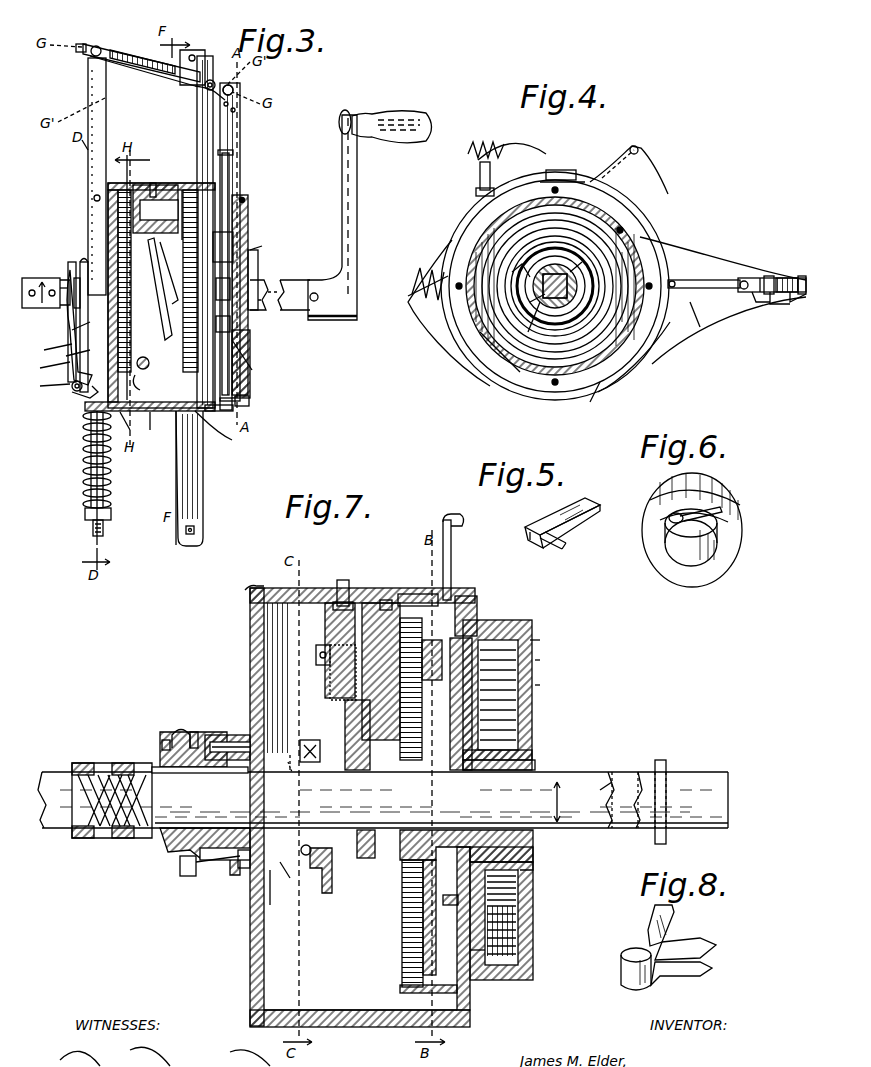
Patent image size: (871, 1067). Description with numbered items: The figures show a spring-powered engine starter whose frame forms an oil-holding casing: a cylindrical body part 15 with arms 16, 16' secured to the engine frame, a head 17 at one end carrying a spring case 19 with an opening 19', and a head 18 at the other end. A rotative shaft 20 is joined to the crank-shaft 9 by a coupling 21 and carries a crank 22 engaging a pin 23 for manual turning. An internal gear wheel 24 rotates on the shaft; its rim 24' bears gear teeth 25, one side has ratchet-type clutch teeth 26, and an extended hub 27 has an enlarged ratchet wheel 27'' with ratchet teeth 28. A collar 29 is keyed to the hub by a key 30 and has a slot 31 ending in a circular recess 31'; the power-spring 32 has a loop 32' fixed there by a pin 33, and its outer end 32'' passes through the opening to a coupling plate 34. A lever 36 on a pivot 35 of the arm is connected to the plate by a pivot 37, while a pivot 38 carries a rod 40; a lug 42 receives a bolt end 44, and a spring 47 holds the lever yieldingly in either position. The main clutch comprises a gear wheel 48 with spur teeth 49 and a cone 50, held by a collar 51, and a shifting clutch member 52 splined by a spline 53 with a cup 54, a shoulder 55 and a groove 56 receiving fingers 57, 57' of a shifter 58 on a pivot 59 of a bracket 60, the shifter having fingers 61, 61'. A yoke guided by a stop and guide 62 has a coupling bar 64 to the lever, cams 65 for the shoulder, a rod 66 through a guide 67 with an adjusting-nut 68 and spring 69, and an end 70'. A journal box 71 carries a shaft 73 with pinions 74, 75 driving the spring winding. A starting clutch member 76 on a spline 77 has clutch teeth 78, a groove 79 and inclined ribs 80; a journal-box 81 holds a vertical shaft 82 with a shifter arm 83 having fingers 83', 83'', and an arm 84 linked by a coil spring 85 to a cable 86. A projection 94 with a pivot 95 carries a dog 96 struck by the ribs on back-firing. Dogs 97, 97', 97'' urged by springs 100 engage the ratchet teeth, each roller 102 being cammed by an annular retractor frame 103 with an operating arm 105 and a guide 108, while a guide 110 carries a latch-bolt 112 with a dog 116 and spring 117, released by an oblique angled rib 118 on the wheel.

In FIG. 3, the crank-shaft 9 is at (26, 280).
In FIG. 7, the crank-shaft 9 is at (54, 772).
In FIG. 3, the cylindrical body part 15 is at (125, 423).
In FIG. 7, the cylindrical body part 15 is at (360, 1027).
In FIG. 3, the arm 16 is at (201, 478).
In FIG. 4, the arm 16 is at (446, 313).
In FIG. 3, the arm 16' is at (180, 101).
In FIG. 4, the arm 16' is at (712, 324).
In FIG. 3, the head 17 is at (252, 372).
In FIG. 4, the head 17 is at (620, 380).
In FIG. 7, the head 17 is at (500, 978).
In FIG. 3, the head 18 is at (110, 225).
In FIG. 7, the head 18 is at (250, 653).
In FIG. 3, the spring case 19 is at (266, 240).
In FIG. 4, the spring case 19 is at (560, 286).
In FIG. 7, the spring case 19 is at (541, 658).
In FIG. 3, the opening 19' is at (260, 288).
In FIG. 4, the opening 19' is at (575, 286).
In FIG. 7, the opening 19' is at (545, 681).
In FIG. 3, the rotative shaft 20 is at (272, 282).
In FIG. 4, the rotative shaft 20 is at (560, 302).
In FIG. 7, the rotative shaft 20 is at (628, 772).
In FIG. 3, the coupling 21 is at (38, 275).
In FIG. 7, the coupling 21 is at (106, 763).
In FIG. 3, the crank 22 is at (342, 190).
In FIG. 3, the pin 23 is at (315, 302).
In FIG. 7, the pin 23 is at (660, 760).
In FIG. 3, the internal gear wheel 24 is at (248, 238).
In FIG. 7, the internal gear wheel 24 is at (471, 947).
In FIG. 3, the rim 24' is at (230, 430).
In FIG. 7, the rim 24' is at (404, 994).
In FIG. 3, the gear teeth 25 is at (177, 470).
In FIG. 7, the gear teeth 25 is at (402, 944).
In FIG. 3, the clutch teeth 26 is at (232, 290).
In FIG. 7, the clutch teeth 26 is at (423, 870).
In FIG. 4, the extended hub 27 is at (542, 334).
In FIG. 7, the extended hub 27 is at (484, 807).
In FIG. 7, the ratchet wheel 27'' is at (525, 858).
In FIG. 3, the ratchet teeth 28 is at (232, 326).
In FIG. 7, the ratchet teeth 28 is at (522, 958).
In FIG. 3, the collar 29 is at (258, 262).
In FIG. 4, the collar 29 is at (590, 399).
In FIG. 6, the collar 29 is at (700, 588).
In FIG. 7, the collar 29 is at (530, 750).
In FIG. 4, the key 30 is at (520, 232).
In FIG. 7, the key 30 is at (534, 762).
In FIG. 6, the slot 31 is at (719, 516).
In FIG. 6, the circular recess 31' is at (666, 540).
In FIG. 3, the power-spring 32 is at (273, 359).
In FIG. 4, the power-spring 32 is at (488, 363).
In FIG. 5, the power-spring 32 is at (570, 512).
In FIG. 7, the power-spring 32 is at (527, 931).
In FIG. 4, the loop 32' is at (516, 277).
In FIG. 5, the loop 32' is at (535, 550).
In FIG. 3, the outer end 32'' is at (254, 242).
In FIG. 4, the outer end 32'' is at (723, 298).
In FIG. 5, the pin 33 is at (566, 546).
In FIG. 3, the coupling plate 34 is at (215, 90).
In FIG. 4, the coupling plate 34 is at (746, 278).
In FIG. 3, the pivot 35 is at (145, 96).
In FIG. 3, the lever 36 is at (150, 84).
In FIG. 4, the lever 36 is at (782, 304).
In FIG. 3, the pivot 37 is at (234, 90).
In FIG. 4, the pivot 37 is at (760, 278).
In FIG. 4, the pivot 38 is at (770, 276).
In FIG. 3, the rod 40 is at (205, 62).
In FIG. 4, the rod 40 is at (760, 302).
In FIG. 3, the lug 42 is at (100, 48).
In FIG. 4, the lug 42 is at (800, 278).
In FIG. 3, the bolt end 44 is at (88, 38).
In FIG. 3, the spring 47 is at (160, 62).
In FIG. 4, the spring 47 is at (784, 278).
In FIG. 7, the gear wheel 48 is at (240, 870).
In FIG. 3, the spur teeth 49 is at (67, 353).
In FIG. 7, the spur teeth 49 is at (282, 880).
In FIG. 7, the cone 50 is at (222, 862).
In FIG. 7, the collar 51 is at (286, 778).
In FIG. 3, the shifting clutch member 52 is at (74, 300).
In FIG. 7, the shifting clutch member 52 is at (160, 748).
In FIG. 7, the spline 53 is at (166, 764).
In FIG. 7, the cup 54 is at (166, 850).
In FIG. 3, the shoulder 55 is at (115, 238).
In FIG. 7, the shoulder 55 is at (196, 732).
In FIG. 3, the peripheral groove 56 is at (70, 255).
In FIG. 7, the peripheral groove 56 is at (180, 728).
In FIG. 3, the finger 57 is at (71, 332).
In FIG. 7, the finger 57 is at (157, 722).
In FIG. 7, the finger 57' is at (171, 877).
In FIG. 3, the shifter 58 is at (72, 366).
In FIG. 8, the shifter 58 is at (672, 922).
In FIG. 3, the pivot 59 is at (72, 386).
In FIG. 3, the bracket 60 is at (80, 398).
In FIG. 3, the finger 61 is at (39, 383).
In FIG. 8, the finger 61 is at (702, 945).
In FIG. 8, the finger 61' is at (702, 971).
In FIG. 7, the combined stop and guide 62 is at (205, 866).
In FIG. 3, the coupling bar 64 is at (90, 104).
In FIG. 4, the coupling bar 64 is at (796, 304).
In FIG. 7, the cam 65 is at (216, 735).
In FIG. 3, the rod 66 is at (104, 530).
In FIG. 4, the rod 66 is at (420, 302).
In FIG. 3, the guide 67 is at (85, 414).
In FIG. 3, the adjusting-nut 68 is at (85, 516).
In FIG. 3, the spring 69 is at (83, 468).
In FIG. 4, the spring 69 is at (418, 274).
In FIG. 3, the yoke end 70' is at (42, 348).
In FIG. 3, the journal box 71 is at (140, 200).
In FIG. 3, the shaft 73 is at (160, 183).
In FIG. 3, the pinion 74 is at (122, 185).
In FIG. 3, the pinion 75 is at (185, 183).
In FIG. 3, the starting clutch member 76 is at (170, 340).
In FIG. 7, the starting clutch member 76 is at (330, 893).
In FIG. 7, the spline 77 is at (345, 775).
In FIG. 3, the clutch teeth 78 is at (149, 366).
In FIG. 7, the clutch teeth 78 is at (386, 858).
In FIG. 7, the groove 79 is at (308, 856).
In FIG. 7, the inclined ribs 80 is at (370, 722).
In FIG. 4, the journal-box 81 is at (476, 192).
In FIG. 3, the shaft 82 is at (148, 385).
In FIG. 4, the shaft 82 is at (480, 174).
In FIG. 3, the shifter arm 83 is at (152, 422).
In FIG. 7, the finger 83' is at (308, 733).
In FIG. 7, the finger 83'' is at (242, 911).
In FIG. 4, the arm 84 is at (510, 146).
In FIG. 4, the coil spring 85 is at (490, 145).
In FIG. 4, the cable 86 is at (590, 180).
In FIG. 7, the projection 94 is at (340, 580).
In FIG. 7, the pivot 95 is at (316, 655).
In FIG. 7, the dog 96 is at (330, 690).
In FIG. 7, the dog 97 is at (406, 689).
In FIG. 3, the dog 97' is at (252, 272).
In FIG. 4, the dog 97' is at (704, 319).
In FIG. 3, the dog 97'' is at (256, 400).
In FIG. 3, the spring 100 is at (235, 410).
In FIG. 4, the spring 100 is at (558, 170).
In FIG. 7, the spring 100 is at (418, 594).
In FIG. 3, the roller 102 is at (250, 400).
In FIG. 7, the roller 102 is at (516, 632).
In FIG. 3, the annular retractor frame 103 is at (246, 212).
In FIG. 7, the annular retractor frame 103 is at (542, 642).
In FIG. 4, the operating arm 105 is at (648, 160).
In FIG. 7, the operating arm 105 is at (452, 560).
In FIG. 7, the guide 108 is at (443, 900).
In FIG. 7, the guide 110 is at (395, 598).
In FIG. 7, the latch-bolt 112 is at (468, 596).
In FIG. 7, the dog 116 is at (380, 640).
In FIG. 7, the spring 117 is at (325, 640).
In FIG. 7, the oblique angled rib 118 is at (466, 610).